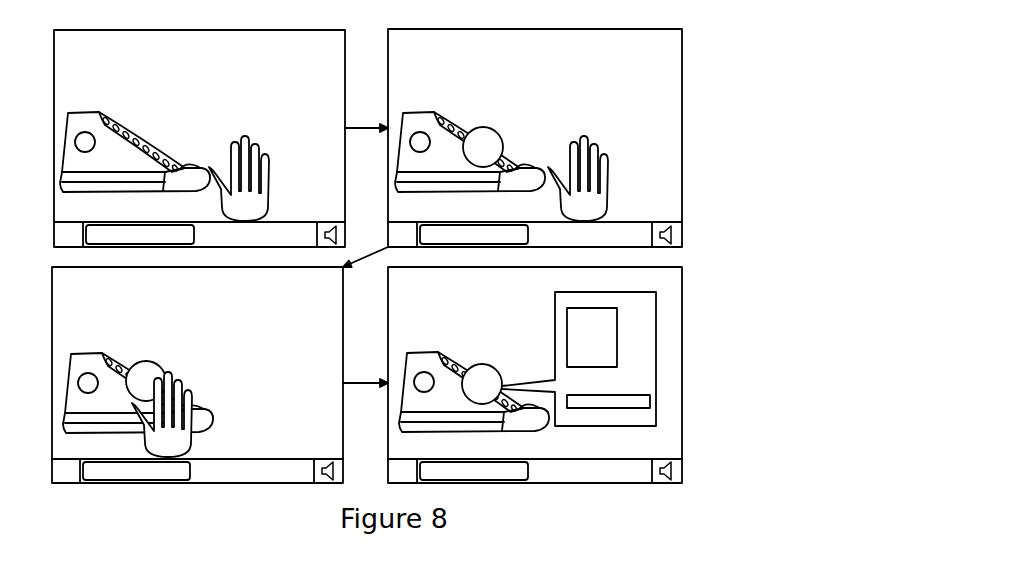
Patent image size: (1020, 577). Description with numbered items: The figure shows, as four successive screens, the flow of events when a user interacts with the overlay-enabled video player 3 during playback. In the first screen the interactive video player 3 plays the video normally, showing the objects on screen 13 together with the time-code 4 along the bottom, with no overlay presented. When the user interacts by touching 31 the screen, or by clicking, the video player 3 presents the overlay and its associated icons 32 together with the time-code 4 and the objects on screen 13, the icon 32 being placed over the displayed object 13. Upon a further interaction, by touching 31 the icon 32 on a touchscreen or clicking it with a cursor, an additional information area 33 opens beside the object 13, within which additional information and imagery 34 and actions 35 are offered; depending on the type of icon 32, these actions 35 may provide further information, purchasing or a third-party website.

The interactive video player 3 is at (320, 77).
The time-code 4 is at (90, 238).
The objects on screen 13 is at (150, 145).
The touching 31 is at (253, 197).
The icons 32 is at (503, 138).
The additional information area 33 is at (564, 300).
The imagery 34 is at (613, 320).
The actions 35 is at (620, 402).